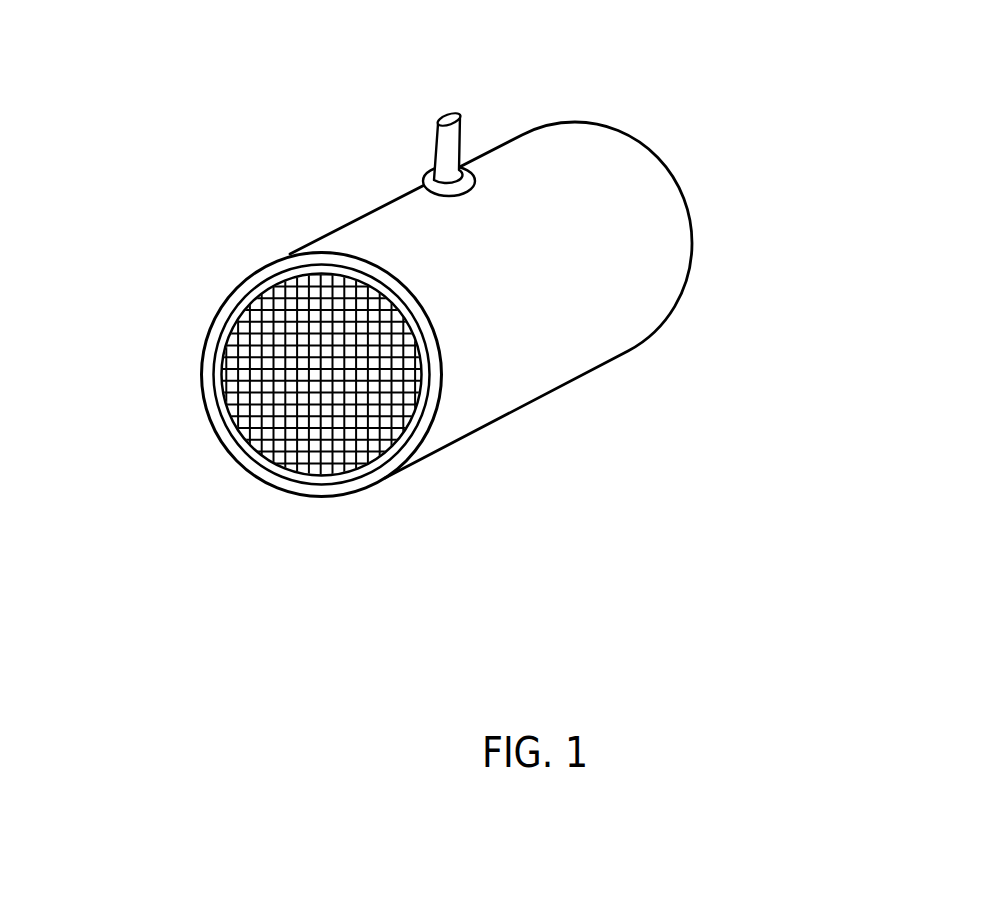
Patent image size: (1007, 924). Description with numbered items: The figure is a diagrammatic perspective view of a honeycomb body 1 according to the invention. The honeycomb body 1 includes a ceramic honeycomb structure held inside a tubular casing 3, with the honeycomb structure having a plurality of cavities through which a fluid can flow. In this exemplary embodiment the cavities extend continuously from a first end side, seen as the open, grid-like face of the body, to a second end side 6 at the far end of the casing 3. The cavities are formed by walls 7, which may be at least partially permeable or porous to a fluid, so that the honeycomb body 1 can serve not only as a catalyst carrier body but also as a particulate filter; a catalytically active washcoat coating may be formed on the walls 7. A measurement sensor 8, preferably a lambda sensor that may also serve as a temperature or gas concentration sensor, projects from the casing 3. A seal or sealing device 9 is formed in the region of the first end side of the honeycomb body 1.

The honeycomb body 1 is at (463, 326).
The tubular casing 3 is at (332, 487).
The second end side 6 is at (690, 207).
The walls 7 is at (290, 465).
The measurement sensor 8 is at (458, 122).
The sealing device 9 is at (217, 376).